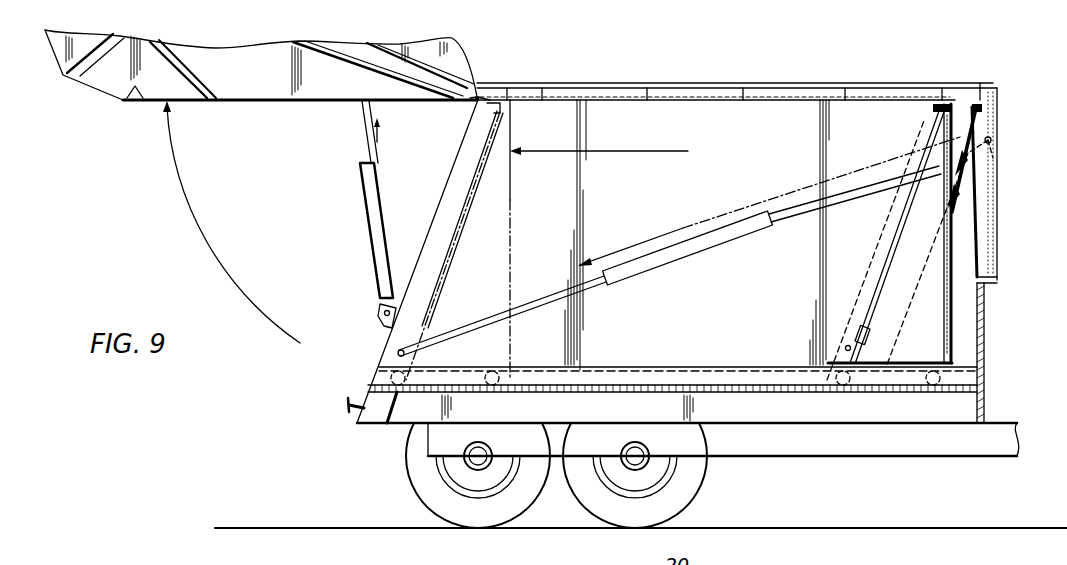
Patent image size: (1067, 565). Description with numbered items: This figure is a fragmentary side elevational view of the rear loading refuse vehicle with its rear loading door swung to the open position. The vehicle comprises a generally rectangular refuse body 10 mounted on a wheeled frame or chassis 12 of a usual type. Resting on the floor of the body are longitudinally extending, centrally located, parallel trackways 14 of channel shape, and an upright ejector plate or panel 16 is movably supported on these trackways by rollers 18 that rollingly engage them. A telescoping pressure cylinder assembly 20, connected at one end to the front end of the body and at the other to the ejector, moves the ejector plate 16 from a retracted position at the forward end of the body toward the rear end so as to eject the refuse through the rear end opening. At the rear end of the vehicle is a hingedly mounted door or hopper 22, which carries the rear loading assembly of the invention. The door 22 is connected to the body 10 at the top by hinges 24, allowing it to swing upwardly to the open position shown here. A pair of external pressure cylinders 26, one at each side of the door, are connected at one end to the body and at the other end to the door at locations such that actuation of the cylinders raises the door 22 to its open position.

The refuse body 10 is at (783, 82).
The wheeled frame or chassis 12 is at (758, 447).
The trackways 14 is at (730, 370).
The ejector plate or panel 16 is at (495, 208).
The rollers 18 is at (915, 372).
The telescoping pressure cylinder assembly 20 is at (965, 214).
The door or hopper 22 is at (287, 100).
The hinges 24 is at (477, 92).
The external pressure cylinders 26 is at (367, 223).